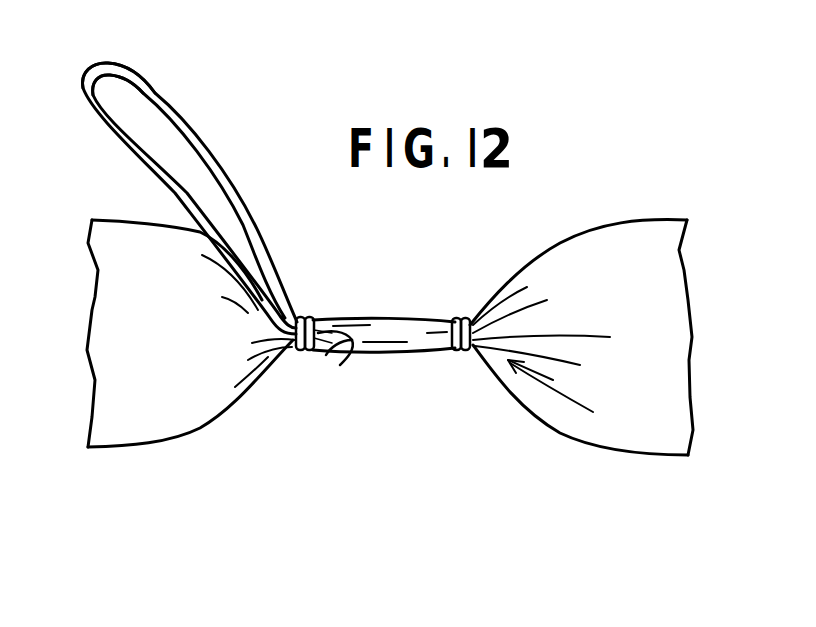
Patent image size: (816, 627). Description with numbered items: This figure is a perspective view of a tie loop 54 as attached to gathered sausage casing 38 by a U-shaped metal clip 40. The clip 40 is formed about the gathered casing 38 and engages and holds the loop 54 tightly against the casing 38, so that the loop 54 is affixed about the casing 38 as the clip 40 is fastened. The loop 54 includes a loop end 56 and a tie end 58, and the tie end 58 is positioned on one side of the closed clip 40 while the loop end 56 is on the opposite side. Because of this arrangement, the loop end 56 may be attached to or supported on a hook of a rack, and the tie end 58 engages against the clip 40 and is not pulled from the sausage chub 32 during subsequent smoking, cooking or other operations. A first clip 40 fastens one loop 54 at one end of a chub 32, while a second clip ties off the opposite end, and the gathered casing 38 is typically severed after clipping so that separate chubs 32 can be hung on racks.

The sausage chub 32 is at (170, 333).
The gathered casing 38 is at (388, 320).
The clip 40 is at (307, 314).
The tie loop 54 is at (198, 133).
The loop end 56 is at (108, 63).
The tie end 58 is at (330, 352).